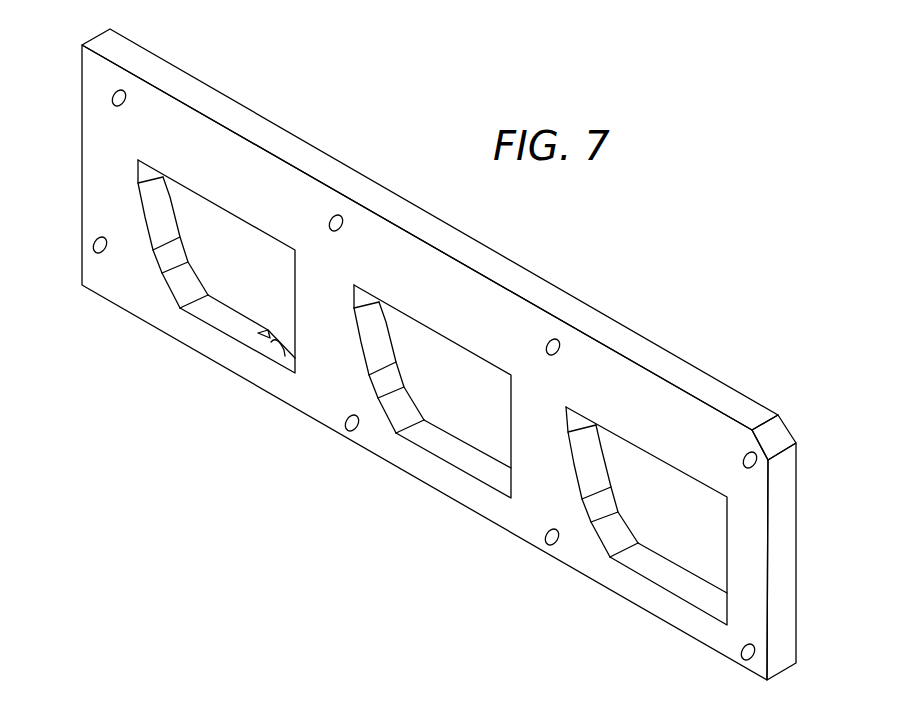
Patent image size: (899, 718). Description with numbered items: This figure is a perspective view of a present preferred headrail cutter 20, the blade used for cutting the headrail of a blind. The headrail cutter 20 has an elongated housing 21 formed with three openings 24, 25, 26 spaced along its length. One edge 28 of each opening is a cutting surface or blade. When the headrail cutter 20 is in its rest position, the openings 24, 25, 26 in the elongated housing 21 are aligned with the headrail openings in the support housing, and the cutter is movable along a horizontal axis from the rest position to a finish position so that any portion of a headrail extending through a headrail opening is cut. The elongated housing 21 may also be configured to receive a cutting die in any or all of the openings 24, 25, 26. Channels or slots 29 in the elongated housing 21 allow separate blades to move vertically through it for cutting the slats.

The headrail cutter 20 is at (624, 308).
The elongated housing 21 is at (391, 192).
The opening 24 is at (227, 230).
The opening 25 is at (443, 355).
The opening 26 is at (662, 480).
The edge 28 is at (150, 217).
The channels or slots 29 is at (268, 341).